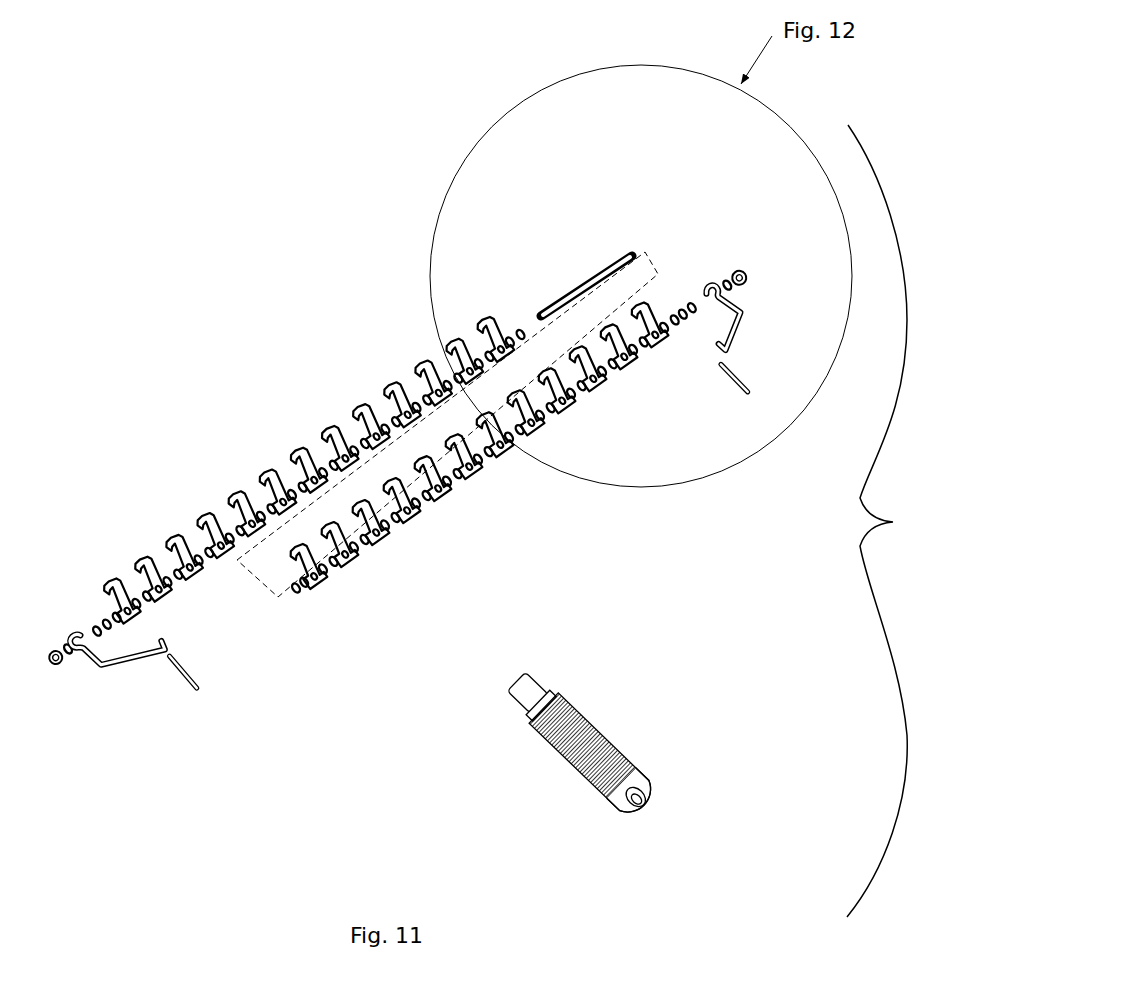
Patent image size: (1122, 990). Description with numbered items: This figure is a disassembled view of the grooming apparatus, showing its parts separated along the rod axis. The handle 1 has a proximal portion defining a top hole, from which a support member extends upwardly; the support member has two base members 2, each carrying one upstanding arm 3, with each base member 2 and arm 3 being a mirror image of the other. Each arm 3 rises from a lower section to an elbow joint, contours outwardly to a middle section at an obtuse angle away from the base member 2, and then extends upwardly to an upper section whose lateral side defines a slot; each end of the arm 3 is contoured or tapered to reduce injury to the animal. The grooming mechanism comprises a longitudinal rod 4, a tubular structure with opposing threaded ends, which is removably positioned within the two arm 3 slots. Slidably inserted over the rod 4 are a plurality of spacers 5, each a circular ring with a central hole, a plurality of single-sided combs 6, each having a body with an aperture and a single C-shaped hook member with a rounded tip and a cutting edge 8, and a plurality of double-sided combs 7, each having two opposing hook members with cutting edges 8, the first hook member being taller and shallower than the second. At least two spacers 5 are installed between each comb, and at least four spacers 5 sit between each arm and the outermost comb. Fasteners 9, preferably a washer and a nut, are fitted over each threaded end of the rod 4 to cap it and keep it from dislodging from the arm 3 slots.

The handle 1 is at (582, 690).
The base member 2 is at (199, 689).
The upstanding arm 3 is at (130, 672).
The rod 4 is at (565, 292).
The spacer 5 is at (513, 385).
The single-sided comb 6 is at (621, 317).
The double-sided comb 7 is at (669, 309).
The cutting edge 8 is at (366, 541).
The fastener 9 is at (754, 272).